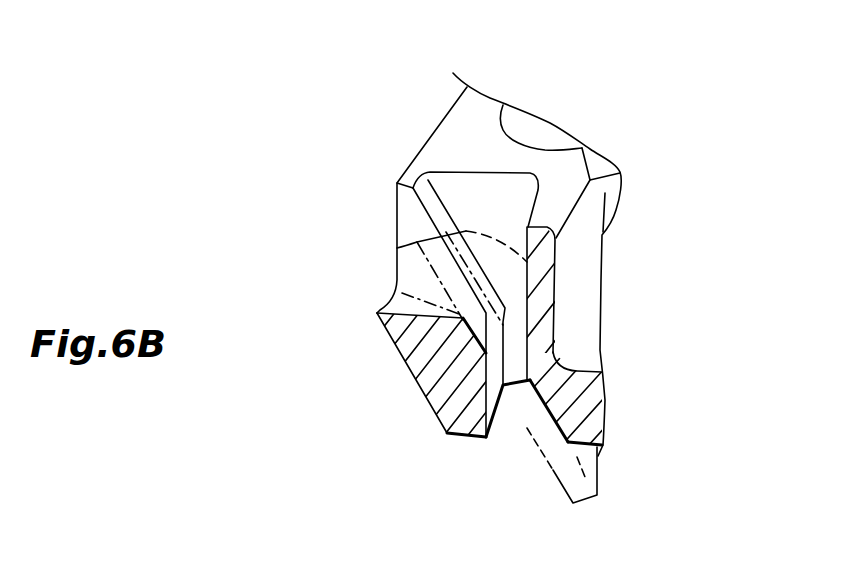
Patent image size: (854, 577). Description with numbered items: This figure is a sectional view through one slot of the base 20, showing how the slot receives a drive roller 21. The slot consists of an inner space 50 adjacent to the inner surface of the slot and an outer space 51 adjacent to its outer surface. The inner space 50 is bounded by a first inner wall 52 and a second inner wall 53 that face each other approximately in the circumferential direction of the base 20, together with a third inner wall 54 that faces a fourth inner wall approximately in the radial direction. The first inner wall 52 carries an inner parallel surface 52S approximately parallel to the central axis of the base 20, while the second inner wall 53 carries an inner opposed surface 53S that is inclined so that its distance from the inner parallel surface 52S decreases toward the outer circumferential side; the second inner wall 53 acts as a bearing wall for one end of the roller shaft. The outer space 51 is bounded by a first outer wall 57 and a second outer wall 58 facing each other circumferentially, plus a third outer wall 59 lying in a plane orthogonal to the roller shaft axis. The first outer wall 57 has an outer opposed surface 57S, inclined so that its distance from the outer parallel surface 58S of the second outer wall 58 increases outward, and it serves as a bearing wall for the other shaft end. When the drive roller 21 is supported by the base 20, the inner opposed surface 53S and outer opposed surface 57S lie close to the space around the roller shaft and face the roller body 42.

The base 20 is at (543, 165).
The drive roller 21 is at (397, 248).
The roller body 42 is at (587, 500).
The inner space 50 is at (520, 225).
The outer space 51 is at (535, 418).
The first inner wall 52 is at (540, 278).
The inner parallel surface 52S is at (540, 278).
The second inner wall 53 is at (410, 174).
The inner opposed surface 53S is at (430, 200).
The third inner wall 54 is at (483, 193).
The first outer wall 57 is at (567, 388).
The outer opposed surface 57S is at (549, 416).
The second outer wall 58 is at (443, 412).
The outer parallel surface 58S is at (492, 412).
The third outer wall 59 is at (527, 332).